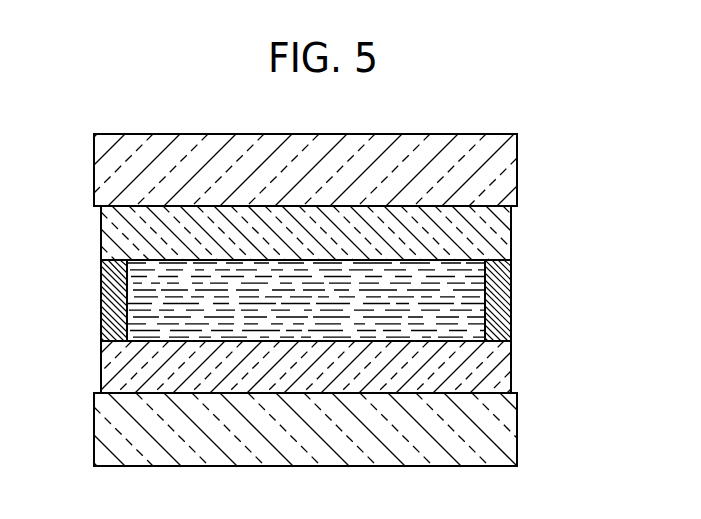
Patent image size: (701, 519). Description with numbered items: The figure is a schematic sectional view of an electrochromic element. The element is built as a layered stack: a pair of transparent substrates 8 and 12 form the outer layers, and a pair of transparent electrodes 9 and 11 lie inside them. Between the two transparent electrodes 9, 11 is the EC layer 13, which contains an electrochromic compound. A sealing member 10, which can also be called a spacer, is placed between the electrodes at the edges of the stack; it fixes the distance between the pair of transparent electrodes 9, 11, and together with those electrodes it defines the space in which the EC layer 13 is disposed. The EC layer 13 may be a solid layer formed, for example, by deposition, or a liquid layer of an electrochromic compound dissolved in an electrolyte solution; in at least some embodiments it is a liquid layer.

The transparent substrate 8 is at (500, 175).
The transparent electrode 9 is at (500, 232).
The sealing member 10 is at (501, 305).
The transparent electrode 11 is at (502, 368).
The transparent substrate 12 is at (505, 432).
The EC layer 13 is at (180, 313).